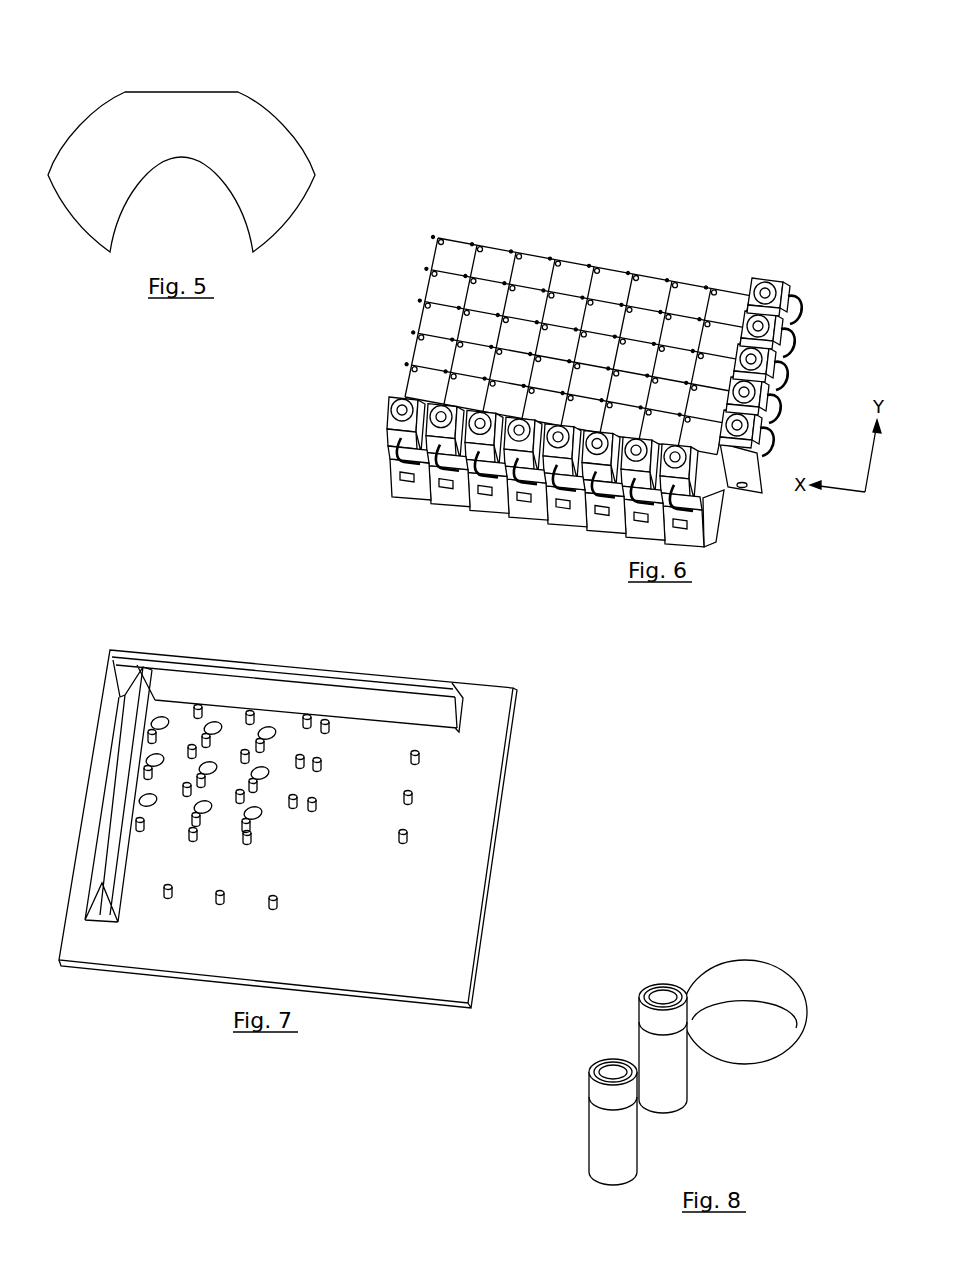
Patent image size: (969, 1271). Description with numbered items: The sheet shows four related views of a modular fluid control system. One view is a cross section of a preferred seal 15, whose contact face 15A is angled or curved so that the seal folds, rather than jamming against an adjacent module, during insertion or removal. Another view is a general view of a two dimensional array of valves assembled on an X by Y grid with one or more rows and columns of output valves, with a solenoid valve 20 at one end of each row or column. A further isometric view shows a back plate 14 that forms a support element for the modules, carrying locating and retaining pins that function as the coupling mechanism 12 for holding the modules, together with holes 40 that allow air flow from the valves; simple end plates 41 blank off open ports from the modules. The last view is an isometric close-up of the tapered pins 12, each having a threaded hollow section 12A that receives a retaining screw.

In FIG. 5, the seal 15 is at (209, 136).
In FIG. 5, the contact face 15A is at (298, 152).
In FIG. 6, the solenoid valve 20 is at (763, 278).
In FIG. 7, the back plate 14 is at (462, 814).
In FIG. 7, the end plates 41 is at (325, 697).
In FIG. 7, the holes 40 is at (267, 728).
In FIG. 8, the holes 40 is at (753, 1023).
In FIG. 7, the tapered pins 12 is at (247, 833).
In FIG. 8, the tapered pins 12 is at (646, 1054).
In FIG. 8, the threaded hollow section 12A is at (667, 993).